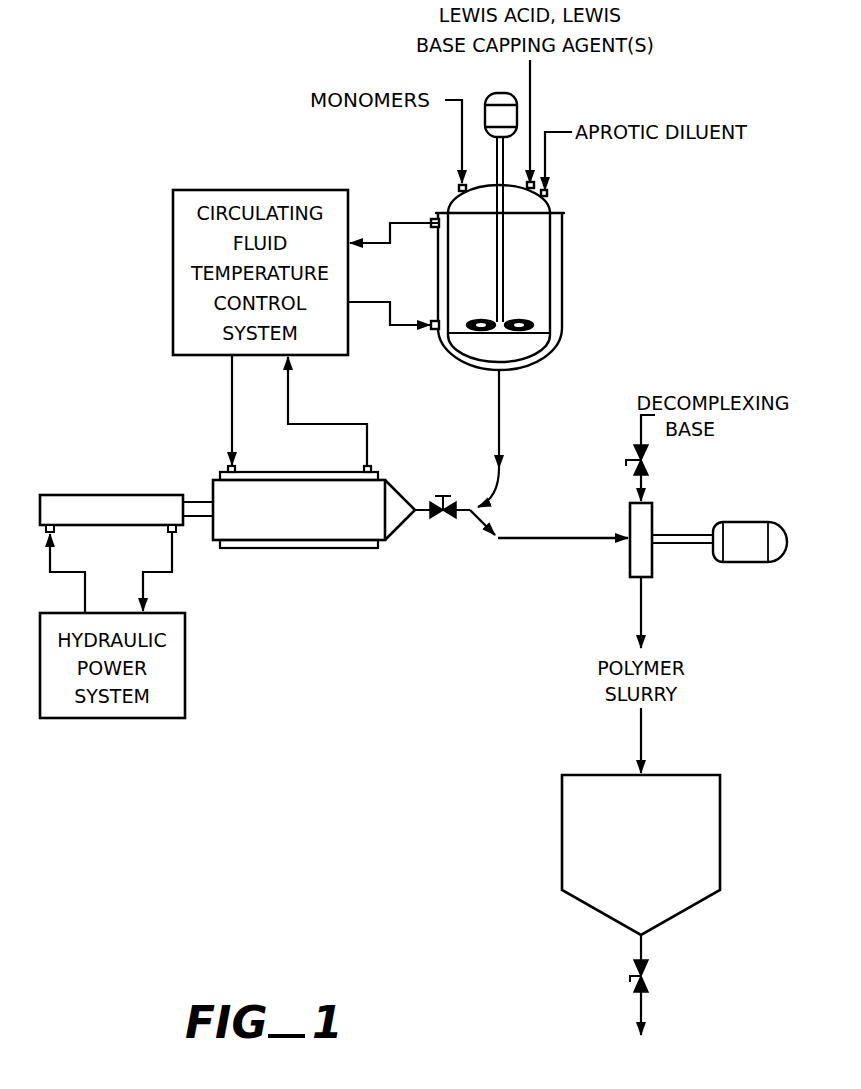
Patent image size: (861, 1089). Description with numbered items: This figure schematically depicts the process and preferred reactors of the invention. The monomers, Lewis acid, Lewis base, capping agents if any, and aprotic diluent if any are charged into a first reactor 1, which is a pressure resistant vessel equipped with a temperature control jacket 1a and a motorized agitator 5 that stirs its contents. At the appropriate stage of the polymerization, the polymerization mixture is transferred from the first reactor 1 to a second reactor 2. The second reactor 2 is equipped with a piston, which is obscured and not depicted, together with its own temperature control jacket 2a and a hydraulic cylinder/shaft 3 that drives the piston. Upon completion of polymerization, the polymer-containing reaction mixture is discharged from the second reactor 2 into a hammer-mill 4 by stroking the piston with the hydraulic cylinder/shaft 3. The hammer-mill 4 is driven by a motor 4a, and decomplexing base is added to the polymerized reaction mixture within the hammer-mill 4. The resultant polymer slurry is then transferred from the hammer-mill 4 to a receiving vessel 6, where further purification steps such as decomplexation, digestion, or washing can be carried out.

The first reactor 1 is at (568, 275).
The temperature control jacket 1a is at (474, 372).
The second reactor 2 is at (392, 548).
The temperature control jacket 2a is at (292, 548).
The hydraulic cylinder/shaft 3 is at (142, 495).
The hammer-mill 4 is at (628, 560).
The motor 4a is at (735, 562).
The motorized agitator 5 is at (485, 118).
The receiving vessel 6 is at (562, 830).